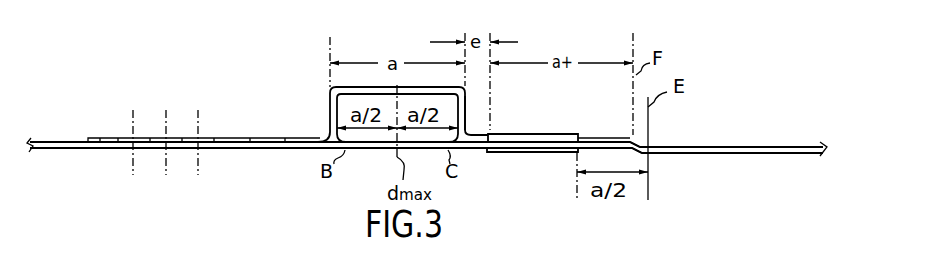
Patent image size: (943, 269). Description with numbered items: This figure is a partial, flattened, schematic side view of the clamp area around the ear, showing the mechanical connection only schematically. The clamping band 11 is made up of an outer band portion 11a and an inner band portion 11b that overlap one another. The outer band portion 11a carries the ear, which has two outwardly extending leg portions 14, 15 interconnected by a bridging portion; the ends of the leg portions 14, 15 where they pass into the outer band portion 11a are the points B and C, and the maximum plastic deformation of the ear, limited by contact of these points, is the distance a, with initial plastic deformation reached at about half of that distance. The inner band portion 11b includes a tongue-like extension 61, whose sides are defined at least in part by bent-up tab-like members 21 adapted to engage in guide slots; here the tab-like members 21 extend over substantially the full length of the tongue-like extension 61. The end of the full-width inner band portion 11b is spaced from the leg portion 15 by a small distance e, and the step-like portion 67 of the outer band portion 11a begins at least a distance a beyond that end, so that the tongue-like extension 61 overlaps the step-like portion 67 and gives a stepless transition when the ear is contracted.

The clamping band 11 is at (763, 147).
The outer band portion 11a is at (115, 138).
The inner band portion 11b is at (72, 150).
The leg portion 14 is at (328, 112).
The leg portion 15 is at (466, 114).
The tab-like members 21 is at (533, 134).
The tongue-like extension 61 is at (532, 152).
The step-like portion 67 is at (652, 140).